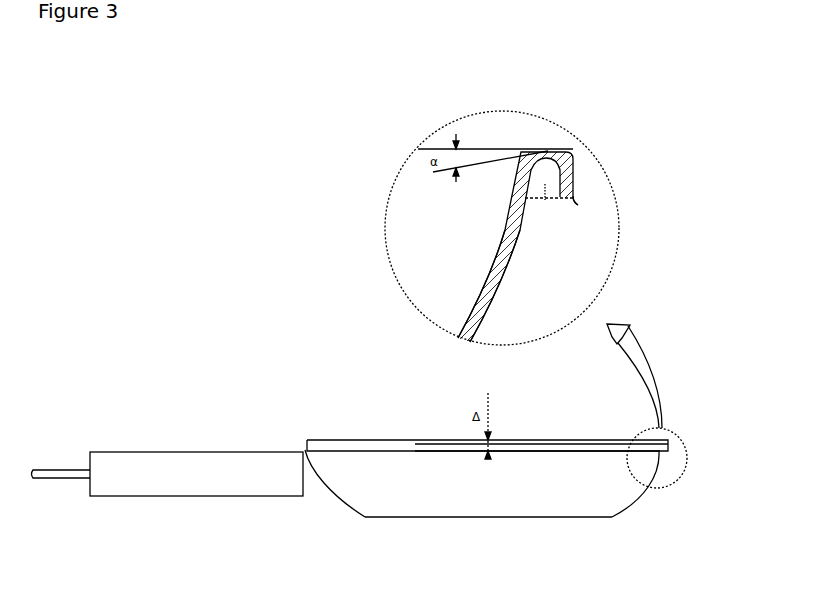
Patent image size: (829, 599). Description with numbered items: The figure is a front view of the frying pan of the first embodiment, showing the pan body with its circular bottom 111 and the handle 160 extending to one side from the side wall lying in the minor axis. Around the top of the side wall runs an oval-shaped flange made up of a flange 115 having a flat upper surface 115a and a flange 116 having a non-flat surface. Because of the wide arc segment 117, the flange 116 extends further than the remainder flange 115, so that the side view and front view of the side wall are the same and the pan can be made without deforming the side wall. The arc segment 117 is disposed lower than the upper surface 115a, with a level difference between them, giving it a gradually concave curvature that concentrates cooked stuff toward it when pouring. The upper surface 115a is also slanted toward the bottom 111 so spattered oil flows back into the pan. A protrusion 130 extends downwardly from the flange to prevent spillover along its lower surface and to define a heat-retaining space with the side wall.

The bottom 111 is at (415, 518).
The flange 115 is at (304, 444).
The upper surface 115a is at (545, 150).
The flange 116 is at (467, 453).
The arc segment 117 is at (508, 441).
The protrusion 130 is at (578, 205).
The handle 160 is at (197, 452).